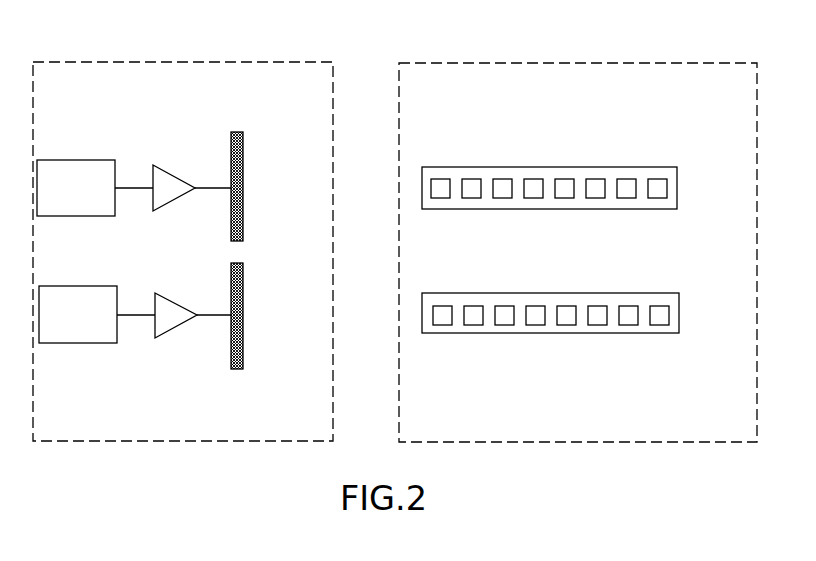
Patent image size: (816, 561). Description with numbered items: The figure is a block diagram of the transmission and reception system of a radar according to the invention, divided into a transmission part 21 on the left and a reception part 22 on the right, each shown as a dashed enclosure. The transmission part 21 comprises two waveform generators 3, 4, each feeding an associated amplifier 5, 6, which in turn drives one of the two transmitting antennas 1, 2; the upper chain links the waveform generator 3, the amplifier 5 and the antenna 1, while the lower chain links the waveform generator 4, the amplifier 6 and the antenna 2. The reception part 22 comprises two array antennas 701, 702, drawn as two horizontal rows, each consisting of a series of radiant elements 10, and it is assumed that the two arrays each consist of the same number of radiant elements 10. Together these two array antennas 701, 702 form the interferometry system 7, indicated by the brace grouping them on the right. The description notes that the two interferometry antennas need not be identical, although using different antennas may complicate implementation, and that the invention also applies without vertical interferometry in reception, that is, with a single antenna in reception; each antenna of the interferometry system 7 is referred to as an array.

The transmission part 21 is at (230, 62).
The reception part 22 is at (672, 63).
The waveform generator 3 is at (73, 160).
The waveform generator 4 is at (73, 286).
The amplifier 5 is at (160, 172).
The amplifier 6 is at (162, 300).
The antenna 1 is at (243, 134).
The antenna 2 is at (243, 357).
The interferometry system 7 is at (702, 148).
The array antenna 701 is at (523, 209).
The array antenna 702 is at (510, 333).
The radiant element 10 is at (621, 178).